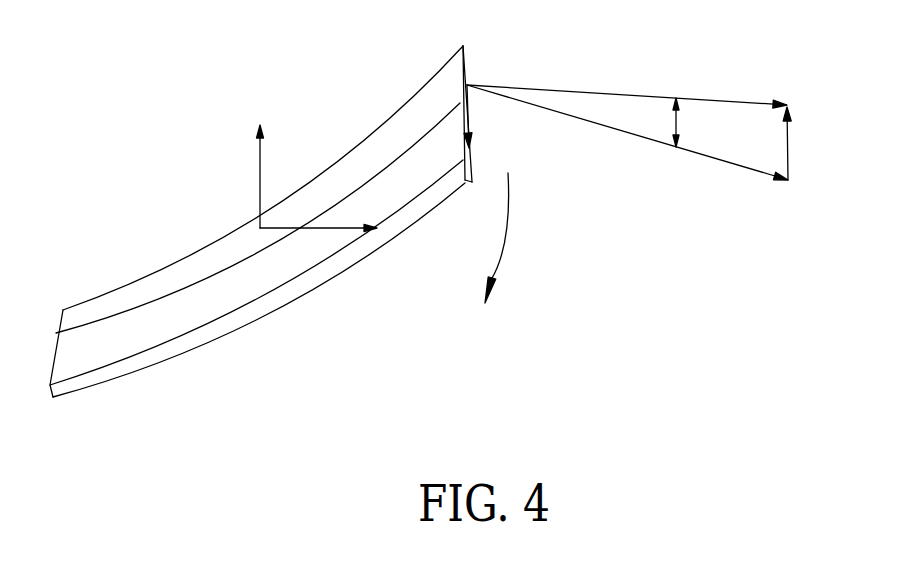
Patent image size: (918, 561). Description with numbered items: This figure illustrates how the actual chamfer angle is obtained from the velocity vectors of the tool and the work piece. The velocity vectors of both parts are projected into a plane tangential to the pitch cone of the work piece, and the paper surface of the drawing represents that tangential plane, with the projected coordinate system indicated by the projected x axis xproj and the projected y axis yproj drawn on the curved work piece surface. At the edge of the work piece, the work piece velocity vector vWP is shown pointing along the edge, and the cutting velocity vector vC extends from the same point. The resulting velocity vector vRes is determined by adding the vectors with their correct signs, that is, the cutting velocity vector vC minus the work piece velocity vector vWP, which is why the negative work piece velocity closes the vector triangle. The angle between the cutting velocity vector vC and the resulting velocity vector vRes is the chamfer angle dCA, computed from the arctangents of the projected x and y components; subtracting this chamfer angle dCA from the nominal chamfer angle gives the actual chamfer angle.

The projected x axis xproj is at (231, 172).
The projected y axis yproj is at (336, 261).
The resulting velocity vector vRes is at (633, 51).
The cutting velocity vector vC is at (627, 138).
The work piece velocity vector vWP is at (492, 112).
The chamfer angle ΔCA dCA is at (704, 122).